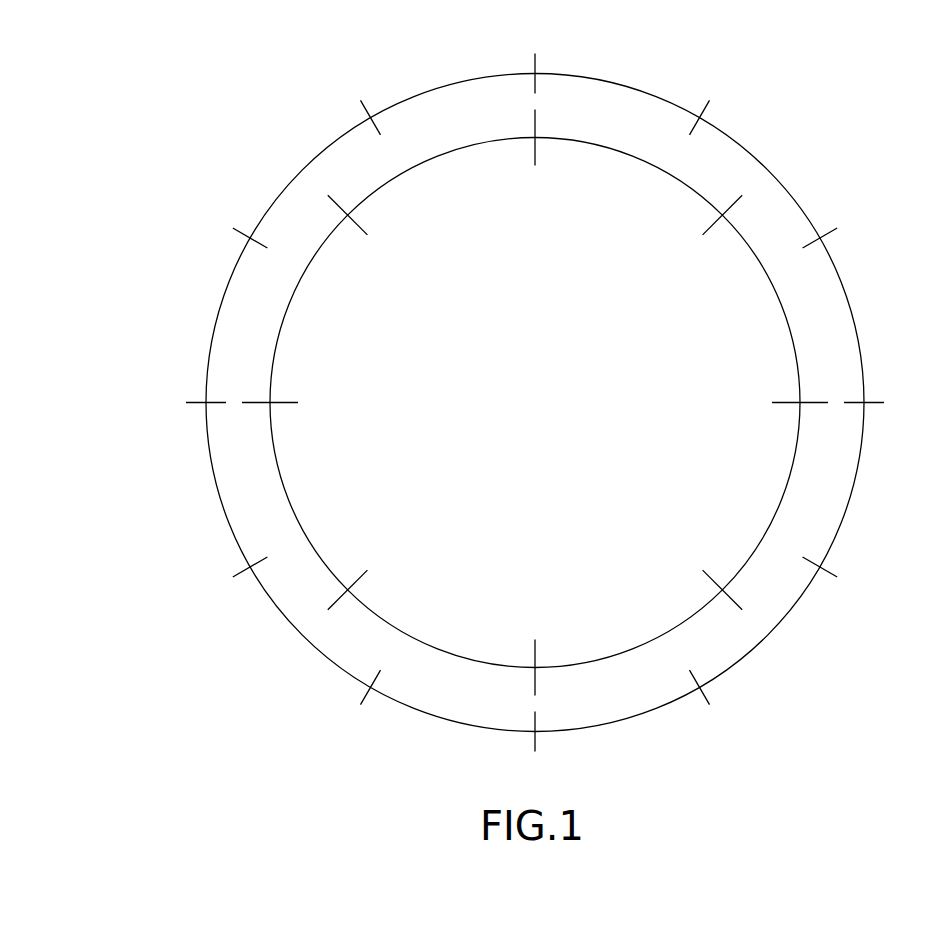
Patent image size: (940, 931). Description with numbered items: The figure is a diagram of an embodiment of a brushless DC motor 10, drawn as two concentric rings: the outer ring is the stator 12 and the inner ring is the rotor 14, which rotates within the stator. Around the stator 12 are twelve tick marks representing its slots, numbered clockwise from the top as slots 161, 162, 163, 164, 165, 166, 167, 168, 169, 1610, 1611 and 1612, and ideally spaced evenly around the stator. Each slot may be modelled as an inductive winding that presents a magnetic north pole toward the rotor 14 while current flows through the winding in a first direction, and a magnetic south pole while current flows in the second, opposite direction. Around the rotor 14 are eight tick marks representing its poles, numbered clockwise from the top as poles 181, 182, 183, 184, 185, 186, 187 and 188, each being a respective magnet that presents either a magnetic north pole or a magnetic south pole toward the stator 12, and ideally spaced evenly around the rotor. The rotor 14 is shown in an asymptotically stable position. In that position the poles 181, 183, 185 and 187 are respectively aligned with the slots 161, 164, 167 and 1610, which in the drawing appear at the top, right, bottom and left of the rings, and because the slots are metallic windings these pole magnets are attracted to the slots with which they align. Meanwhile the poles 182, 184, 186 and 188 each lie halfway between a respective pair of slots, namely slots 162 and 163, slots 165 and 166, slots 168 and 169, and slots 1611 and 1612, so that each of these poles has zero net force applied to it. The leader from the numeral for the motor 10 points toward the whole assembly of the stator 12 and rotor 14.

The brushless DC motor 10 is at (163, 605).
The stator 12 is at (762, 162).
The rotor 14 is at (782, 312).
The slot 161 is at (537, 60).
The slot 162 is at (707, 108).
The slot 163 is at (836, 230).
The slot 164 is at (879, 400).
The slot 165 is at (834, 577).
The slot 166 is at (708, 702).
The slot 167 is at (537, 742).
The slot 168 is at (365, 700).
The slot 169 is at (236, 578).
The slot 1610 is at (190, 405).
The slot 1611 is at (235, 228).
The slot 1612 is at (360, 100).
The pole 181 is at (538, 125).
The pole 182 is at (740, 200).
The pole 183 is at (810, 400).
The pole 184 is at (738, 598).
The pole 185 is at (538, 650).
The pole 186 is at (363, 570).
The pole 187 is at (283, 400).
The pole 188 is at (365, 230).